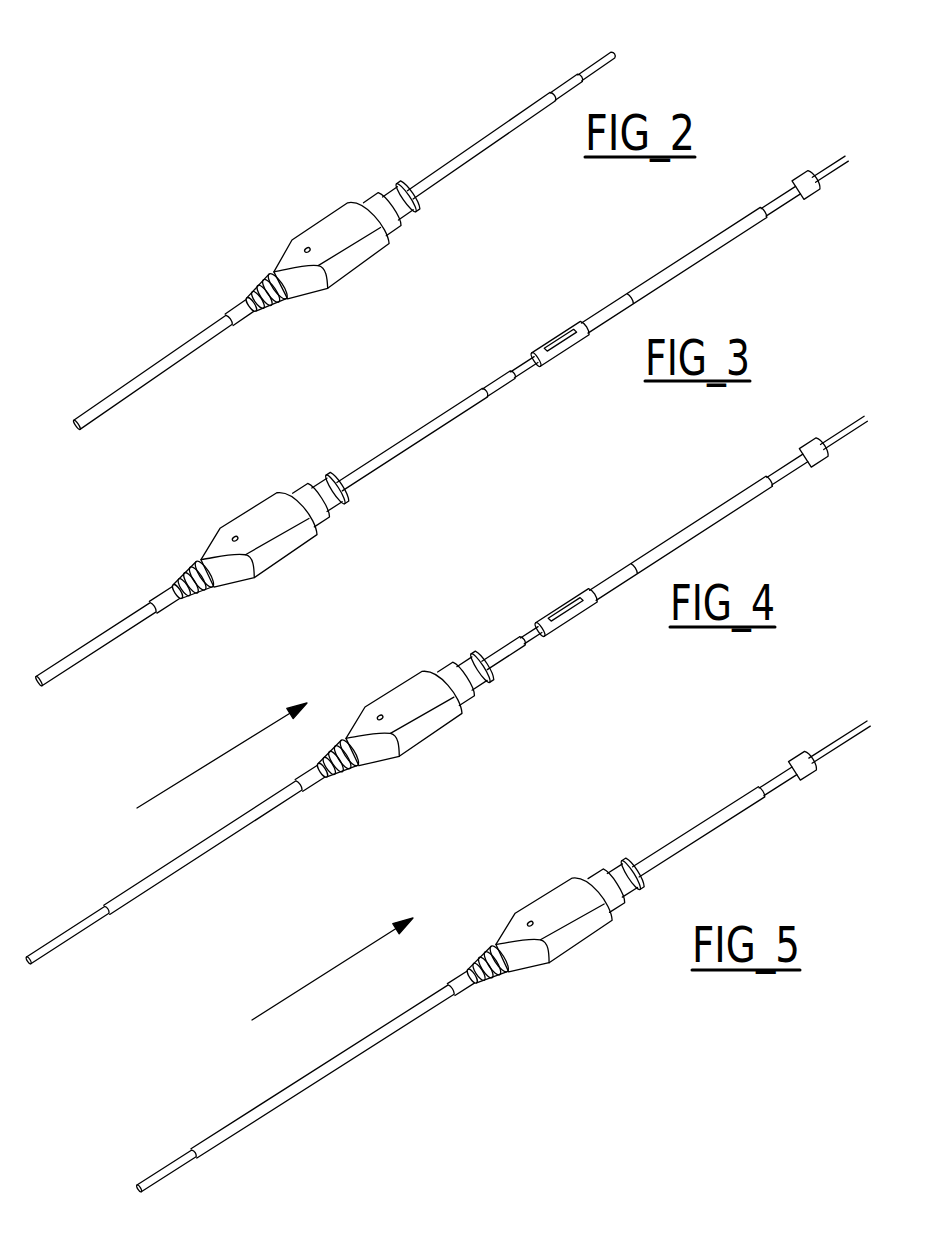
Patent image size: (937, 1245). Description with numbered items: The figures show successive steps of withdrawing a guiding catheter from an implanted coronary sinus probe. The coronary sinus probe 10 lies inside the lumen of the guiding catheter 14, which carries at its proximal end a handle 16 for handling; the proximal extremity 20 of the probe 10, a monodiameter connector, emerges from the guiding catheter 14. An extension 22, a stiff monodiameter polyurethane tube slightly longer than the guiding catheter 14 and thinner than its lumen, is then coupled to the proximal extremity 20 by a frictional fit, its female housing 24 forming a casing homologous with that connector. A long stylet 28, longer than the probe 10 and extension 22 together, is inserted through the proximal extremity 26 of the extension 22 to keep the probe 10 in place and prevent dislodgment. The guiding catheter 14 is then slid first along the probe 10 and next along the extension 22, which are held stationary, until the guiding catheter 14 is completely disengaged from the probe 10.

In FIG. 2, the coronary sinus probe 10 is at (507, 134).
In FIG. 3, the coronary sinus probe 10 is at (393, 455).
In FIG. 4, the coronary sinus probe 10 is at (508, 655).
In FIG. 2, the guiding catheter 14 is at (193, 349).
In FIG. 3, the guiding catheter 14 is at (122, 634).
In FIG. 4, the guiding catheter 14 is at (240, 828).
In FIG. 5, the guiding catheter 14 is at (388, 1030).
In FIG. 2, the handle 16 is at (366, 256).
In FIG. 3, the handle 16 is at (290, 546).
In FIG. 4, the handle 16 is at (432, 730).
In FIG. 5, the handle 16 is at (580, 932).
In FIG. 2, the proximal extremity 20 is at (588, 69).
In FIG. 3, the proximal extremity 20 is at (527, 369).
In FIG. 4, the proximal extremity 20 is at (532, 632).
In FIG. 3, the extension 22 is at (692, 255).
In FIG. 4, the extension 22 is at (700, 527).
In FIG. 5, the extension 22 is at (692, 825).
In FIG. 3, the female housing 24 is at (563, 337).
In FIG. 4, the female housing 24 is at (573, 603).
In FIG. 3, the proximal extremity 26 is at (800, 182).
In FIG. 4, the proximal extremity 26 is at (810, 447).
In FIG. 5, the proximal extremity 26 is at (798, 762).
In FIG. 3, the stylet 28 is at (828, 172).
In FIG. 4, the stylet 28 is at (847, 432).
In FIG. 5, the stylet 28 is at (842, 740).